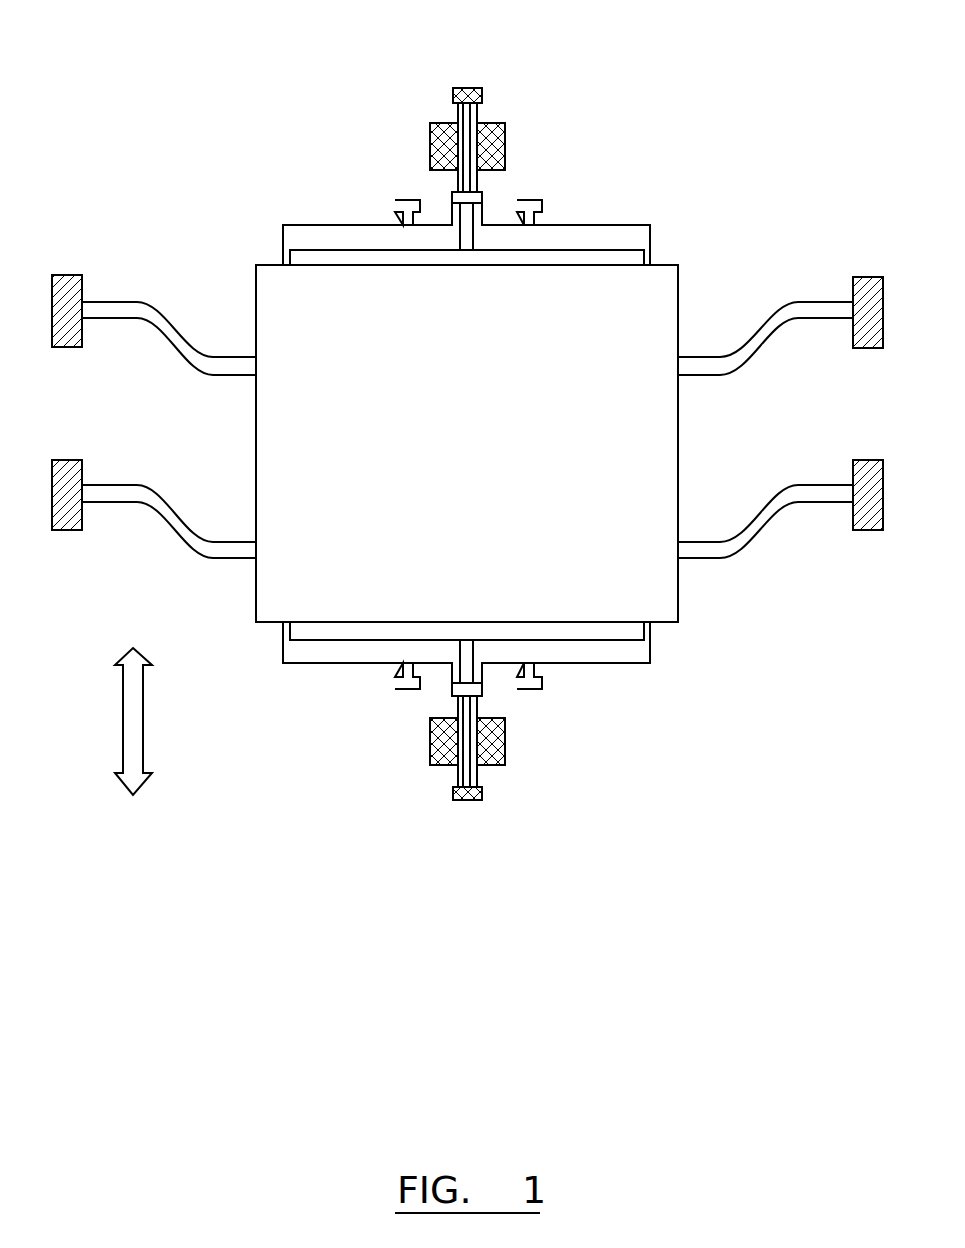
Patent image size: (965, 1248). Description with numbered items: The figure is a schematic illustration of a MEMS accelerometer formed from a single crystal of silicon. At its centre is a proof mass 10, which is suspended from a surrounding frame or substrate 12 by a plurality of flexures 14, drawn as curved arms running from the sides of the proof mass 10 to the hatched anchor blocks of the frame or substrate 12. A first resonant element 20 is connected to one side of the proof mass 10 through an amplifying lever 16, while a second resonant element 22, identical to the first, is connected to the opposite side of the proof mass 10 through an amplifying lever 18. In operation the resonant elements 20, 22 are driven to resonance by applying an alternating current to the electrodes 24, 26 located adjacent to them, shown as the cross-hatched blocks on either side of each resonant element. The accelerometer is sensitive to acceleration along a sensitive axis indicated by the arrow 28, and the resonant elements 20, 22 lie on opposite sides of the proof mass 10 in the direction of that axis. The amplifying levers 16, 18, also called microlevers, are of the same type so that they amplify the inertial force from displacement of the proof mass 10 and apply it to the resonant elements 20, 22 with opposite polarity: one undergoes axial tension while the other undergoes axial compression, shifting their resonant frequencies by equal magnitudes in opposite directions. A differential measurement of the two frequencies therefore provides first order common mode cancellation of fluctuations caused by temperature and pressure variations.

The proof mass 10 is at (658, 585).
The frame or substrate 12 is at (465, 88).
The flexures 14 is at (147, 318).
The amplifying lever 16 is at (618, 665).
The amplifying lever 18 is at (620, 222).
The first resonant element 20 is at (475, 770).
The second resonant element 22 is at (475, 115).
The electrodes 24 is at (430, 742).
The electrodes 26 is at (430, 150).
The arrow 28 is at (134, 727).